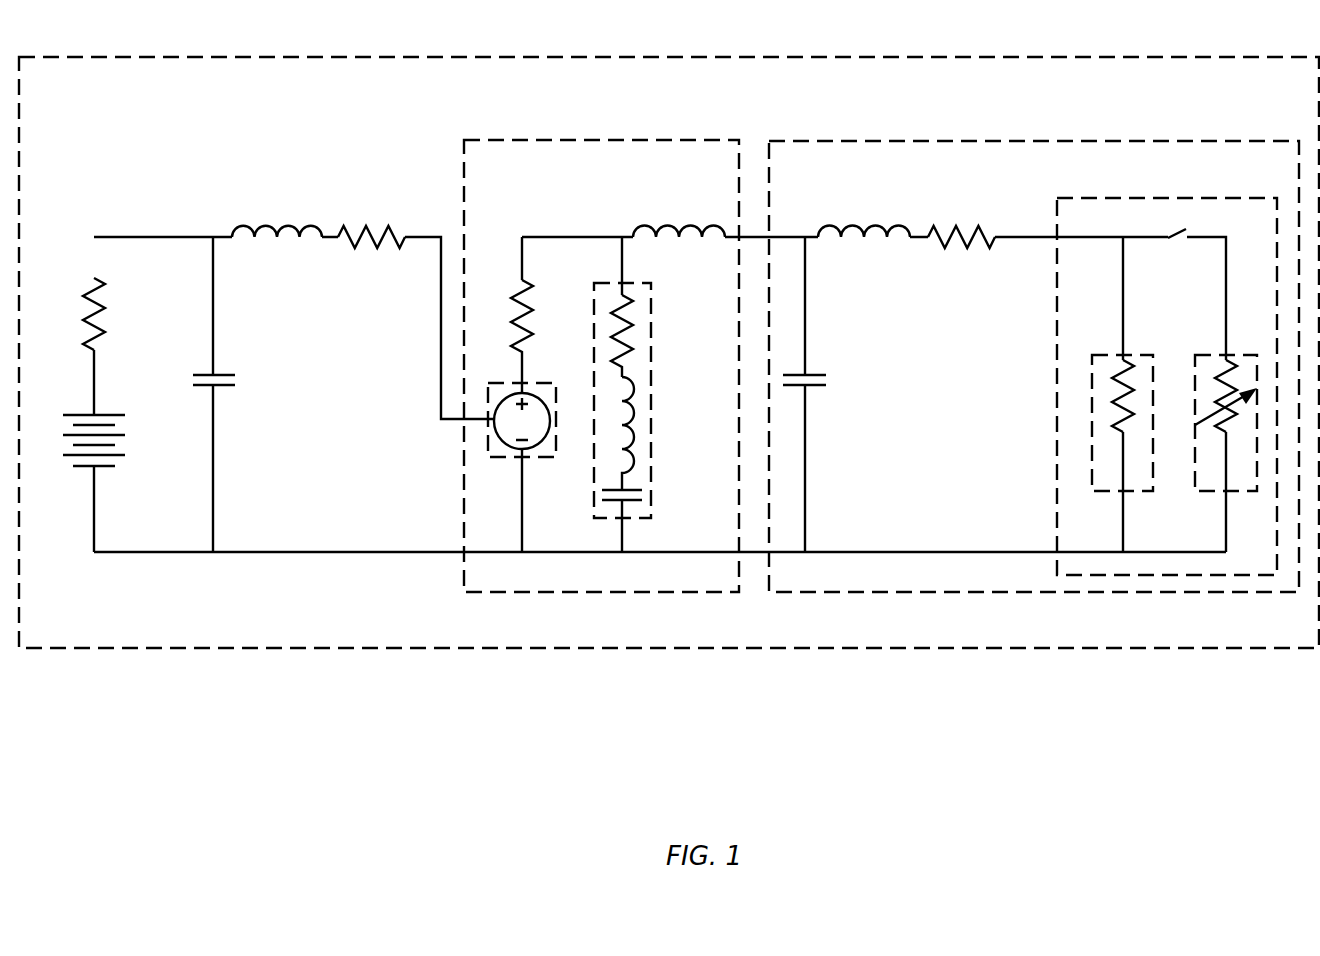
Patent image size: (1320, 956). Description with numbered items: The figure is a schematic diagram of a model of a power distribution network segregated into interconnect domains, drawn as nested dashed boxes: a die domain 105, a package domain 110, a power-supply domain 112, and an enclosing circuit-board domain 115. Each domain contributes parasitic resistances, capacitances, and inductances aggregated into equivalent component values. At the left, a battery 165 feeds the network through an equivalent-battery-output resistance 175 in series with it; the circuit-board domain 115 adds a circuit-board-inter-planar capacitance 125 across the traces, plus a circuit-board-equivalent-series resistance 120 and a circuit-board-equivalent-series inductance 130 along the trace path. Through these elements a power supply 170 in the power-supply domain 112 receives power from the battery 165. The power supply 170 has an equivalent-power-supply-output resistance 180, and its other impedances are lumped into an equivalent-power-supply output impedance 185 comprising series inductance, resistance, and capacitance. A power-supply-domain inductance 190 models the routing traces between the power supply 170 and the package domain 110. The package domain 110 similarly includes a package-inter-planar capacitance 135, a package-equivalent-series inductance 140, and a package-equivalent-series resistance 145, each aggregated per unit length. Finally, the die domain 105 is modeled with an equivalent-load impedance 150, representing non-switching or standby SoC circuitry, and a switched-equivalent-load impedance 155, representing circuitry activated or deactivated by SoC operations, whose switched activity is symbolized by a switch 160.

The die domain 105 is at (1148, 198).
The package domain 110 is at (966, 141).
The power-supply domain 112 is at (613, 140).
The circuit-board domain 115 is at (378, 57).
The circuit-board-equivalent-series resistance 120 is at (367, 225).
The circuit-board-inter-planar capacitance 125 is at (222, 375).
The circuit-board-equivalent-series inductance 130 is at (264, 225).
The package-inter-planar capacitance 135 is at (805, 375).
The package-equivalent-series inductance 140 is at (853, 226).
The package-equivalent-series resistance 145 is at (979, 226).
The equivalent-load impedance 150 is at (1110, 355).
The switched-equivalent-load impedance 155 is at (1208, 355).
The switch 160 is at (1178, 236).
The battery 165 is at (108, 414).
The power supply 170 is at (541, 383).
The equivalent-battery-output resistance 175 is at (100, 311).
The equivalent-power-supply-output resistance 180 is at (533, 306).
The equivalent-power-supply output impedance 185 is at (594, 518).
The power-supply-domain inductance 190 is at (665, 226).